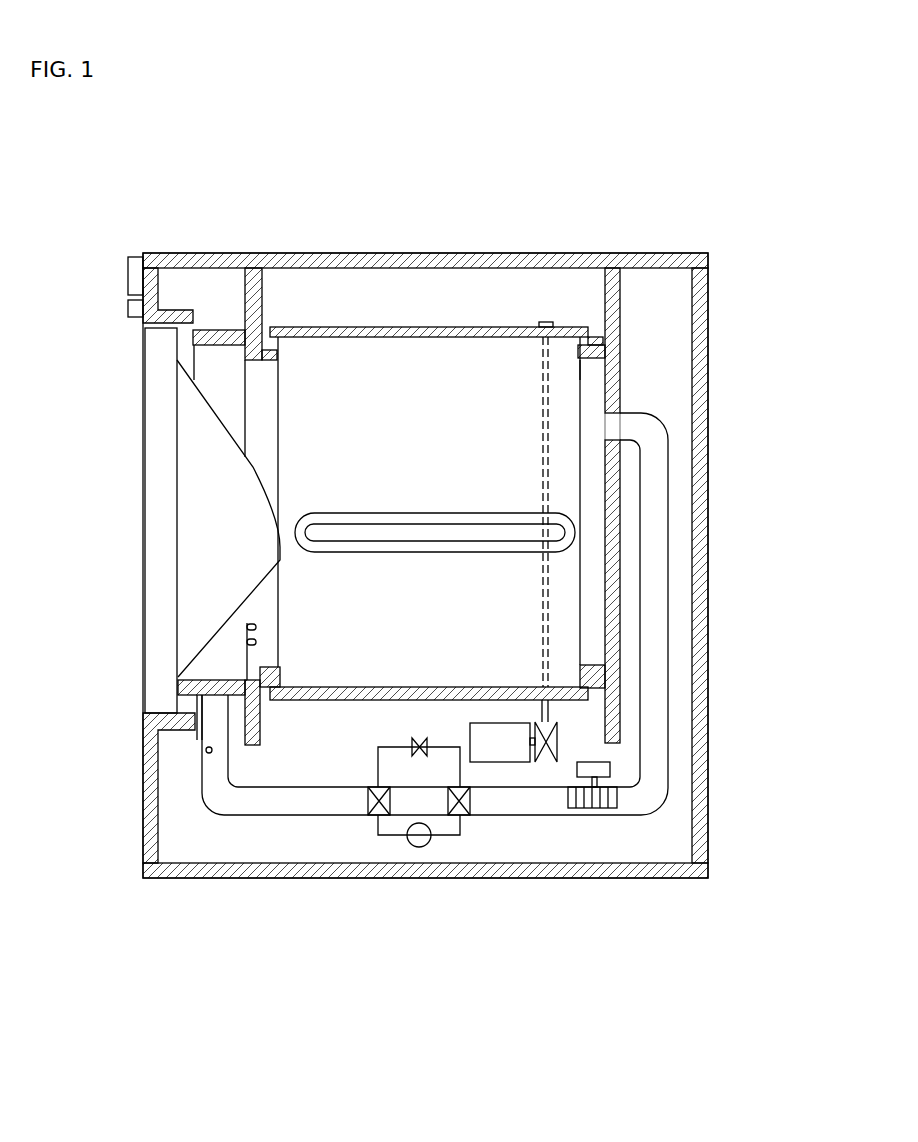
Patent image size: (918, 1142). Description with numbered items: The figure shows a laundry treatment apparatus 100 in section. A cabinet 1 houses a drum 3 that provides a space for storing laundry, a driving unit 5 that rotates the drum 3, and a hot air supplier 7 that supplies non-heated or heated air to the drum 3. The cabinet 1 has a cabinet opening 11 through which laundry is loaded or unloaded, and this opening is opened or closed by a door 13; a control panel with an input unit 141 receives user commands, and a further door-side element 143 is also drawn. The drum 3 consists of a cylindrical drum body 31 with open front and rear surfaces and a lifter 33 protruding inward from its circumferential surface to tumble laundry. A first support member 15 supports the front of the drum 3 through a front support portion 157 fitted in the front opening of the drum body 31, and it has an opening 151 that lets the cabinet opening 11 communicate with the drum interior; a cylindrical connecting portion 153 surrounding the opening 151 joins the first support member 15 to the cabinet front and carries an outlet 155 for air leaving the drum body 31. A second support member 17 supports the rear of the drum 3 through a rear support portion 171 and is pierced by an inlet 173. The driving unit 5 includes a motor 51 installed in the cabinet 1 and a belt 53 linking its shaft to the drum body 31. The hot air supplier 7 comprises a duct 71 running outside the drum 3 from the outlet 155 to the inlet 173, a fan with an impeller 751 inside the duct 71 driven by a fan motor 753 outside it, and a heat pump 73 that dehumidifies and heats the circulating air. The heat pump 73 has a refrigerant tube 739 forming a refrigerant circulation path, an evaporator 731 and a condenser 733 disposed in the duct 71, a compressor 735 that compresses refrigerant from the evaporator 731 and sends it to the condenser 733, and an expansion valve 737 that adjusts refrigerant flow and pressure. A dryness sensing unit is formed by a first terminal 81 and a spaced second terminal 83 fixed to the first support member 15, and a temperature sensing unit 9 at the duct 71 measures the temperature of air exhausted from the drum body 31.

The laundry treatment apparatus 100 is at (791, 162).
The cabinet 1 is at (161, 256).
The cabinet opening 11 is at (177, 356).
The door 13 is at (160, 483).
The input unit 141 is at (128, 306).
The door handle 143 is at (128, 273).
The first support member 15 is at (250, 290).
The opening 151 is at (262, 410).
The connecting portion 153 is at (208, 332).
The outlet 155 is at (222, 702).
The front support portion 157 is at (275, 355).
The second support member 17 is at (620, 303).
The rear support portion 171 is at (578, 378).
The inlet 173 is at (612, 428).
The drum 3 is at (458, 195).
The drum body 31 is at (418, 360).
The lifter 33 is at (455, 514).
The driving unit 5 is at (765, 707).
The motor 51 is at (520, 745).
The belt 53 is at (546, 716).
The hot air supplier 7 is at (640, 940).
The duct 71 is at (258, 800).
The heat pump 73 is at (388, 838).
The evaporator 731 is at (371, 800).
The condenser 733 is at (466, 800).
The compressor 735 is at (432, 836).
The expansion valve 737 is at (416, 740).
The refrigerant tube 739 is at (378, 762).
The impeller 751 is at (597, 808).
The fan motor 753 is at (600, 770).
The first terminal 81 is at (247, 627).
The second terminal 83 is at (247, 642).
The temperature sensing unit 9 is at (206, 752).